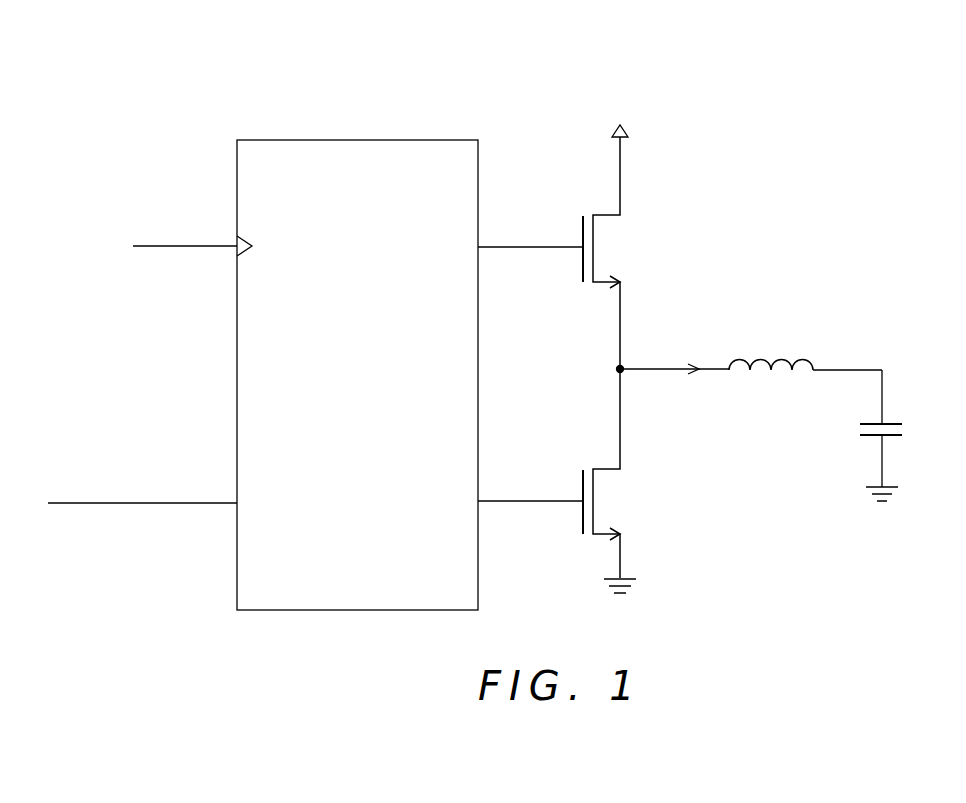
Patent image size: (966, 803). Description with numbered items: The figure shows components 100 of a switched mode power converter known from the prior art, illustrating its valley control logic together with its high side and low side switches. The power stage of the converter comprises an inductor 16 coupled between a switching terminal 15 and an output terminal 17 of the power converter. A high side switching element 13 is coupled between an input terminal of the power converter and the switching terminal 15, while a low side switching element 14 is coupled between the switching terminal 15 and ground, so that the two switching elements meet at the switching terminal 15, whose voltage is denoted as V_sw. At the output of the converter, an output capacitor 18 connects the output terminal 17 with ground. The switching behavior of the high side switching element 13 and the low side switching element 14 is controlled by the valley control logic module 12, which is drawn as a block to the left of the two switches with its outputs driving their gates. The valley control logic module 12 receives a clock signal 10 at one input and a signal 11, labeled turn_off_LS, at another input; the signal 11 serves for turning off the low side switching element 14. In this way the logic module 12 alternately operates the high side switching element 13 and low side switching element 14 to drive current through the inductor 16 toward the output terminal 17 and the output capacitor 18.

The components of a switched mode power converter 100 is at (160, 60).
The clock signal 10 is at (188, 247).
The signal (turn_off_LS) 11 is at (168, 504).
The valley control logic module 12 is at (320, 140).
The high side switching element 13 is at (574, 227).
The low side switching element 14 is at (574, 480).
The switching terminal 15 is at (623, 366).
The inductor 16 is at (767, 345).
The output terminal 17 is at (883, 391).
The output capacitor 18 is at (893, 441).